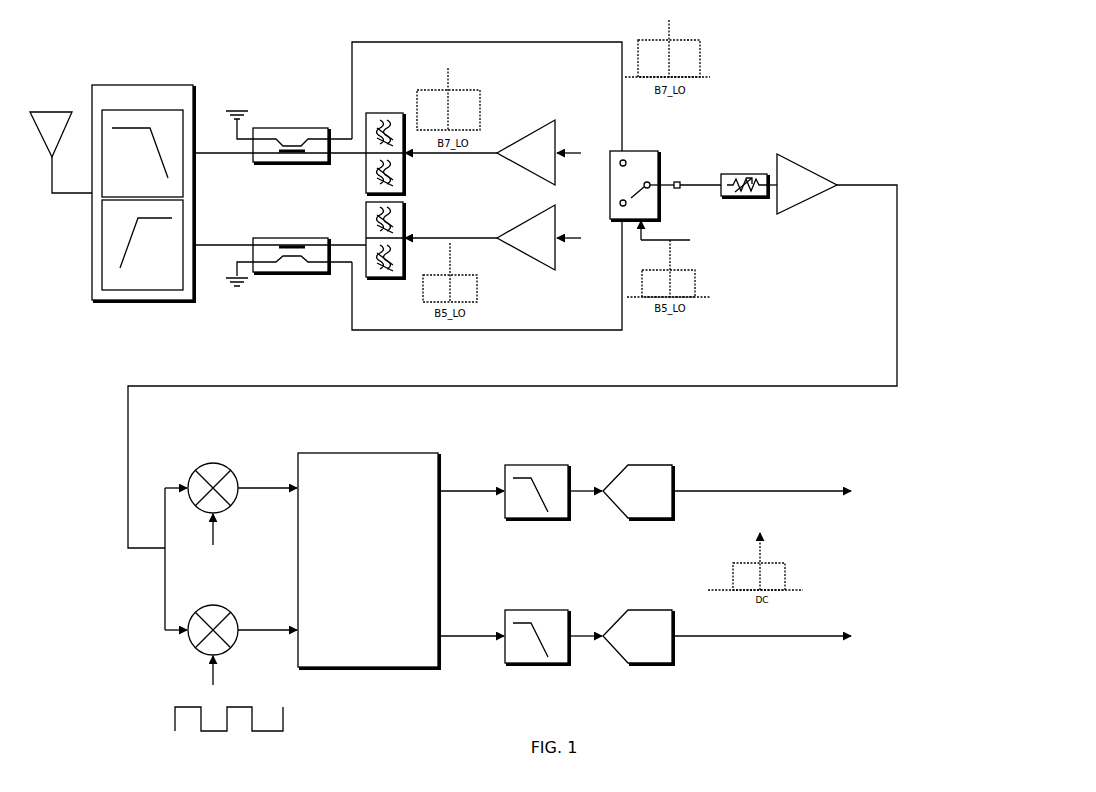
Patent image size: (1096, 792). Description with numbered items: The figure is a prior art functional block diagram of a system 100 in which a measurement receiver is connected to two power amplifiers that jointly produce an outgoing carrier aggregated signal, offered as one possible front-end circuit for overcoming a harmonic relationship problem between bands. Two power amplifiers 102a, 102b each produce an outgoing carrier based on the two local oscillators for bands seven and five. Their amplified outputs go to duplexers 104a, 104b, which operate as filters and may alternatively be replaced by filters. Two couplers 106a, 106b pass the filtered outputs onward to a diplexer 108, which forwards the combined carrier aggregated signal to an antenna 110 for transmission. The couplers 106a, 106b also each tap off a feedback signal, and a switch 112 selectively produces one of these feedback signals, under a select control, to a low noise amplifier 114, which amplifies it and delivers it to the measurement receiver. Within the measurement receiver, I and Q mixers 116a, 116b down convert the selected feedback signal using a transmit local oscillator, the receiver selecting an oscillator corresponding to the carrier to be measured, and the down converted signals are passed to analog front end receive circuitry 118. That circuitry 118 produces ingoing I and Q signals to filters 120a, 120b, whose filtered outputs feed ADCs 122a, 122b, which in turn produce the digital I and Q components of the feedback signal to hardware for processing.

The system 100 is at (899, 74).
The antenna 110 is at (42, 111).
The diplexer 108 is at (143, 85).
The coupler 106a is at (312, 128).
The coupler 106b is at (282, 238).
The duplexer 104a is at (375, 113).
The duplexer 104b is at (390, 278).
The power amplifier 102a is at (535, 128).
The power amplifier 102b is at (540, 264).
The switch 112 is at (632, 150).
The low noise amplifier 114 is at (792, 160).
The I mixer 116a is at (213, 463).
The Q mixer 116b is at (220, 605).
The analog front end receive circuitry 118 is at (340, 453).
The filter 120a is at (555, 465).
The filter 120b is at (553, 610).
The ADC 122a is at (655, 465).
The ADC 122b is at (652, 610).